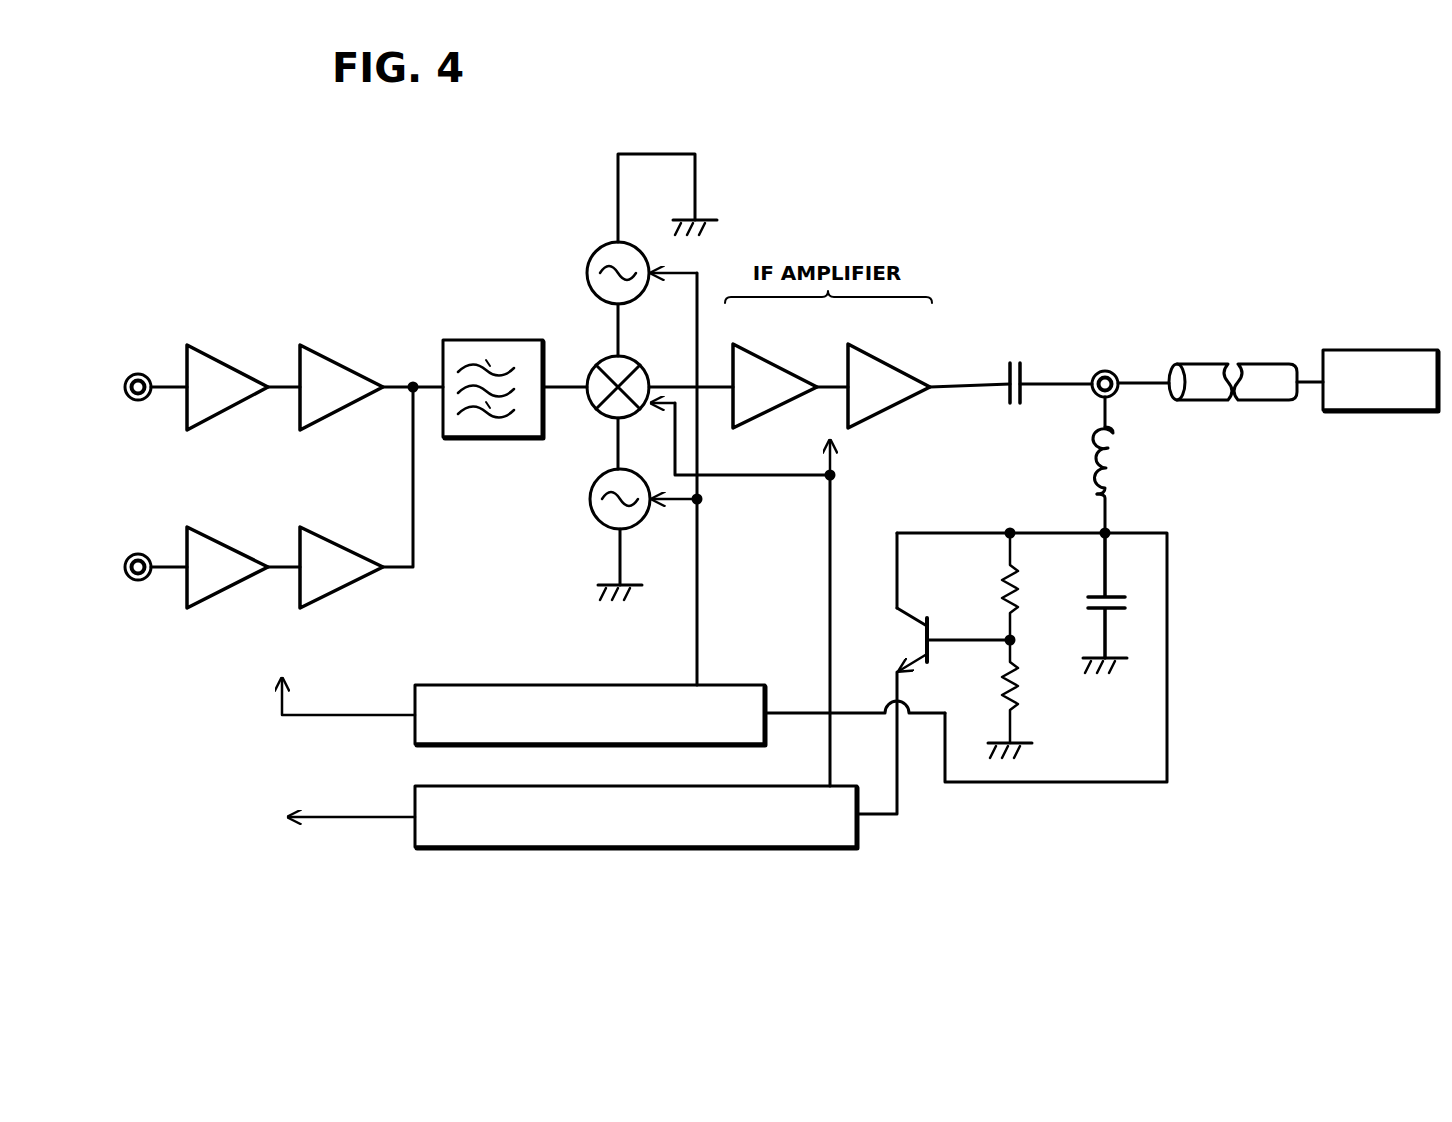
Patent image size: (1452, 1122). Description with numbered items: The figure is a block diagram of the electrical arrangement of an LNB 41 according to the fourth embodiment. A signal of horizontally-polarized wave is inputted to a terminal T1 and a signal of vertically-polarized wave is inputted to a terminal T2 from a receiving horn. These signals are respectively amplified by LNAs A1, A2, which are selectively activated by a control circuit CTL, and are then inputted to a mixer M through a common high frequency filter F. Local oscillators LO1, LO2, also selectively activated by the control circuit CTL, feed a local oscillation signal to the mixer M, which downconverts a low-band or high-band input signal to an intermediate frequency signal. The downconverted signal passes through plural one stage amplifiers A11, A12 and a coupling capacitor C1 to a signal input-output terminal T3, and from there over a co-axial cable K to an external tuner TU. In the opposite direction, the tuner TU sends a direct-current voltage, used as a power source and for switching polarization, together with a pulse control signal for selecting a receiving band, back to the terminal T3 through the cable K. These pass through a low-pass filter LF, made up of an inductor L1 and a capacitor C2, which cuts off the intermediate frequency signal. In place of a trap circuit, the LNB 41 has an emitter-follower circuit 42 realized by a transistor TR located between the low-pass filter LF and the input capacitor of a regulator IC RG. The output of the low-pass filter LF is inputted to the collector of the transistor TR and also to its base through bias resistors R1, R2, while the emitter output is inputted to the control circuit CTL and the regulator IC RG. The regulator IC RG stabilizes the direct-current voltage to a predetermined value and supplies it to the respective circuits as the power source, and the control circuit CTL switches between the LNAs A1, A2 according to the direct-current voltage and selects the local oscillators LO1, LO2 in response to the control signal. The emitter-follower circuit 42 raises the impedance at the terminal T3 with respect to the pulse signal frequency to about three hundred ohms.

The LNB 41 is at (252, 161).
The emitter-follower circuit 42 is at (888, 561).
The terminal T1 is at (140, 375).
The terminal T2 is at (139, 581).
The LNA A1 is at (383, 336).
The LNA A2 is at (178, 621).
The high frequency filter F is at (490, 340).
The mixer M is at (598, 362).
The local oscillator LO1 is at (598, 250).
The local oscillator LO2 is at (589, 498).
The one stage amplifier A11 is at (787, 364).
The one stage amplifier A12 is at (900, 364).
The coupling capacitor C1 is at (1008, 368).
The signal input-output terminal T3 is at (1108, 368).
The co-axial cable K is at (1258, 364).
The tuner TU is at (1377, 350).
The inductor L1 is at (1118, 435).
The low-pass filter LF is at (1188, 425).
The bias resistor R1 is at (1020, 570).
The bias resistor R2 is at (1020, 707).
The capacitor C2 is at (1121, 610).
The transistor TR is at (912, 618).
The control circuit CTL is at (476, 684).
The regulator IC RG is at (484, 850).